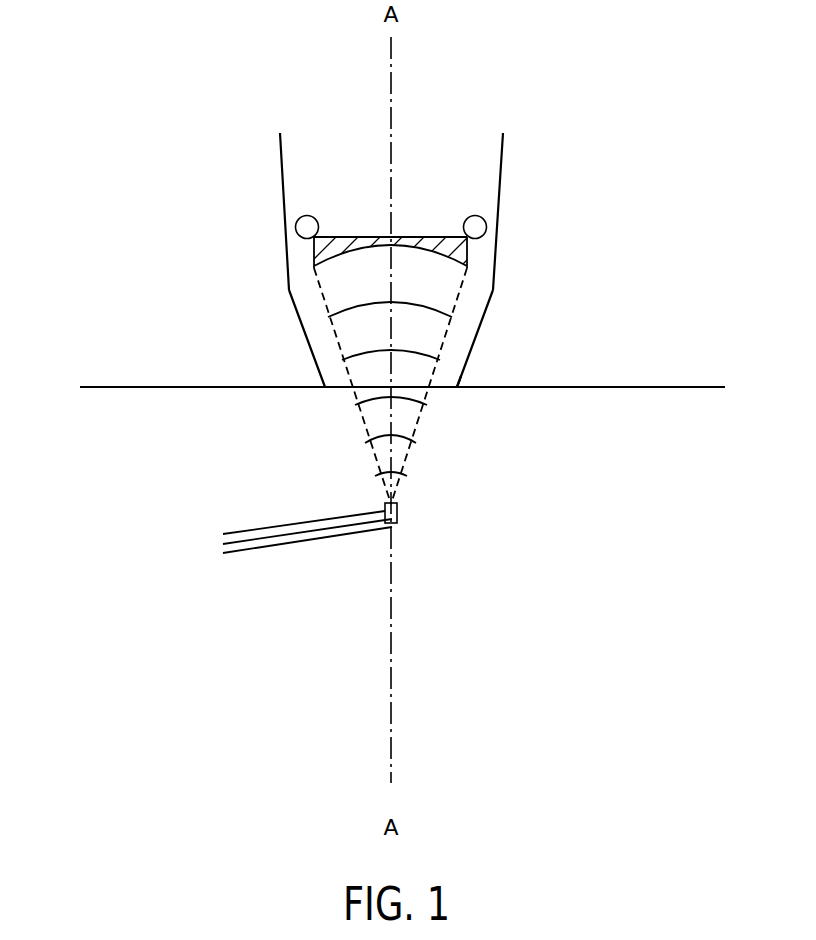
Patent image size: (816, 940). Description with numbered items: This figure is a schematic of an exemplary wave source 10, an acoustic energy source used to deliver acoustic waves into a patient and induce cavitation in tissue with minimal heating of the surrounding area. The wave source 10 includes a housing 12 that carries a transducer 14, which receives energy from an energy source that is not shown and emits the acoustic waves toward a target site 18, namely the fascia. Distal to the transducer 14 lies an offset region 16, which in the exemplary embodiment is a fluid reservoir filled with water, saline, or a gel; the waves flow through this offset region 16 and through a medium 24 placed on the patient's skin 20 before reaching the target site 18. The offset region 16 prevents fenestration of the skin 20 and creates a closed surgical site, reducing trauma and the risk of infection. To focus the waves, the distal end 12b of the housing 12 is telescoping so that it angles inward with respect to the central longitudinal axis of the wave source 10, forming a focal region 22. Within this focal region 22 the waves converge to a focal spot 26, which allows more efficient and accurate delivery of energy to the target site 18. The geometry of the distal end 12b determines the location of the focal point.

The wave source 10 is at (302, 255).
The housing 12 is at (302, 255).
The distal end of the housing 12b is at (84, 273).
The transducer 14 is at (460, 262).
The offset region 16 is at (450, 335).
The target site 18 is at (392, 523).
The skin 20 is at (635, 388).
The focal region 22 is at (368, 375).
The medium 24 is at (458, 387).
The focal spot 26 is at (398, 506).